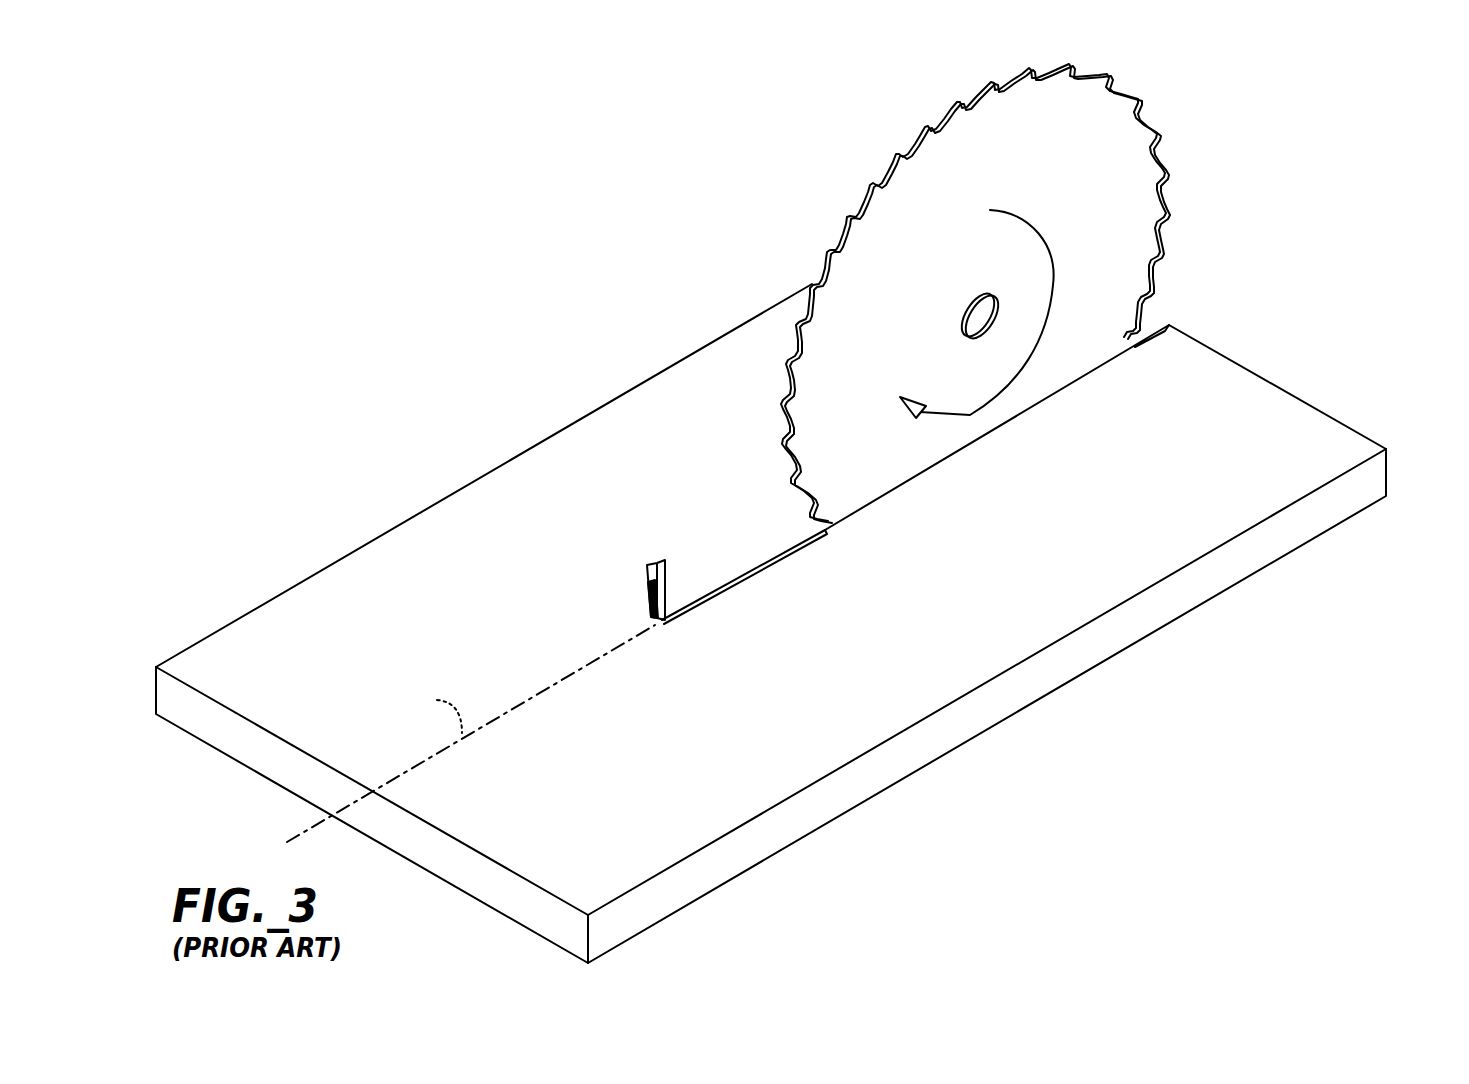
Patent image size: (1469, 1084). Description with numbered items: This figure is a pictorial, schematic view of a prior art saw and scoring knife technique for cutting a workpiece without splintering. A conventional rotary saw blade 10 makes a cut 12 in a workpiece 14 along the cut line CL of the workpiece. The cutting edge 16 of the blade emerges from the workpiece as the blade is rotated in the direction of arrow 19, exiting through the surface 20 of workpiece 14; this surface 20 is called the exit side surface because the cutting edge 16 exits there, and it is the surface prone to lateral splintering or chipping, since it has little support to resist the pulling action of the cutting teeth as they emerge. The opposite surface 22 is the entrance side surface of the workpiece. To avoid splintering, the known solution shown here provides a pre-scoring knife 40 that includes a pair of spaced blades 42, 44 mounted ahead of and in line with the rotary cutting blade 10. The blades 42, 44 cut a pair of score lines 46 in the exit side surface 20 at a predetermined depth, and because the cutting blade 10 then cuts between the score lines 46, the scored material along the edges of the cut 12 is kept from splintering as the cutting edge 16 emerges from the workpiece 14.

The rotary saw blade 10 is at (1169, 325).
The cut 12 is at (1183, 312).
The workpiece 14 is at (1273, 425).
The cutting edge 16 is at (923, 125).
The arrow 19 is at (1043, 228).
The surface 20 is at (1150, 478).
The opposite surface 22 is at (1235, 588).
The pre-scoring knife 40 is at (663, 630).
The blade 42 is at (653, 578).
The blade 44 is at (660, 592).
The score lines 46 is at (770, 568).